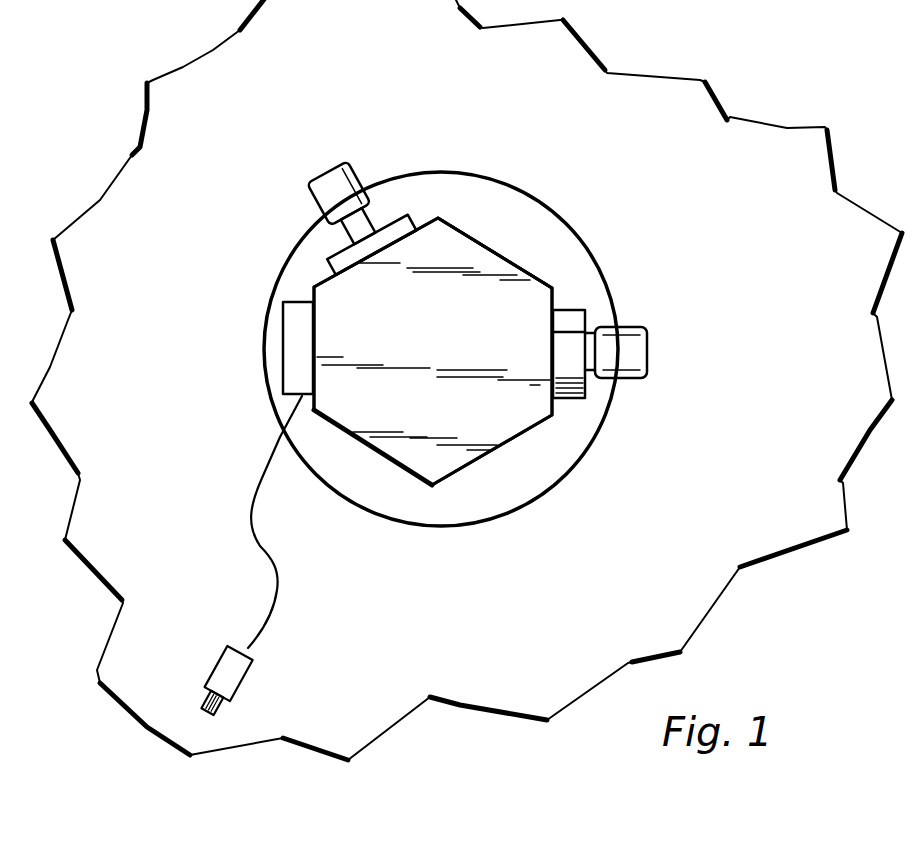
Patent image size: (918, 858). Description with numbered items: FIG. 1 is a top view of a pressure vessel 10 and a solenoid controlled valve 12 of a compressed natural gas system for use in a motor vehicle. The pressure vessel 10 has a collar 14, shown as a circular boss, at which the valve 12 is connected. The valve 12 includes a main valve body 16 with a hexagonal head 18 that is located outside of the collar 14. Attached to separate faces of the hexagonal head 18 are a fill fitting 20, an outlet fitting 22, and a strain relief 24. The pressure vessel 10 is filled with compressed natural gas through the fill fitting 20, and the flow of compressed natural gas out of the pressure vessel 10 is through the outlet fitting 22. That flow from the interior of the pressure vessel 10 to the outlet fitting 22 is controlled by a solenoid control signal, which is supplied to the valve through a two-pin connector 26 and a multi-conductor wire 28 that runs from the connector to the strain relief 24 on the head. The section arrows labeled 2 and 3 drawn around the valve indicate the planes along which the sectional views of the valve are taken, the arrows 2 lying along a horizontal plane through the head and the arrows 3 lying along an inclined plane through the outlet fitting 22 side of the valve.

The pressure vessel 10 is at (797, 117).
The solenoid controlled valve 12 is at (482, 474).
The collar 14 is at (545, 233).
The main valve body 16 is at (410, 348).
The hexagonal head 18 is at (495, 212).
The fill fitting 20 is at (647, 360).
The outlet fitting 22 is at (366, 148).
The strain relief 24 is at (283, 372).
The two-pin connector 26 is at (264, 683).
The multi-conductor wire 28 is at (315, 522).
The section line 2- 2 is at (163, 347).
The section line 3- 3 is at (282, 90).